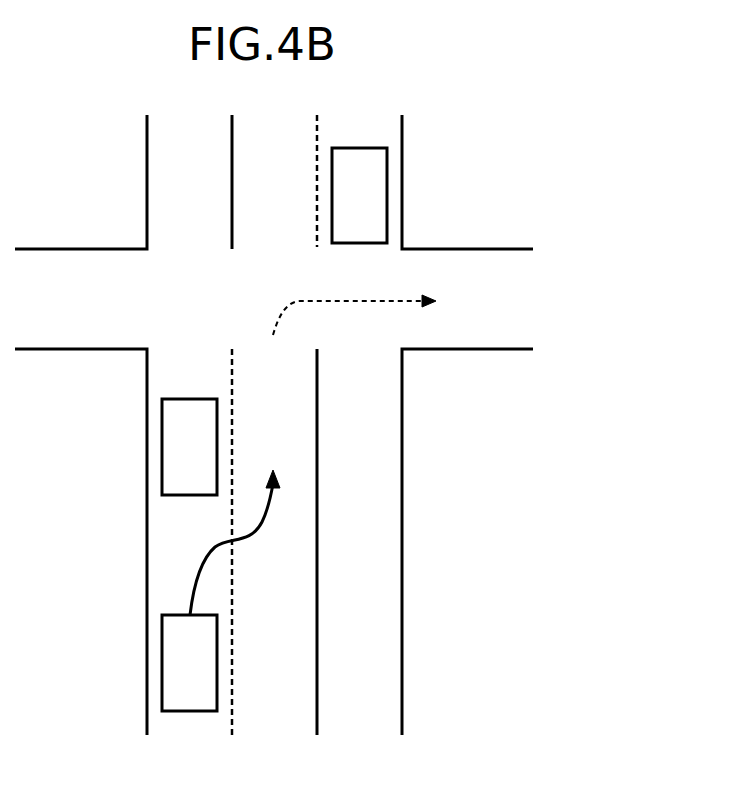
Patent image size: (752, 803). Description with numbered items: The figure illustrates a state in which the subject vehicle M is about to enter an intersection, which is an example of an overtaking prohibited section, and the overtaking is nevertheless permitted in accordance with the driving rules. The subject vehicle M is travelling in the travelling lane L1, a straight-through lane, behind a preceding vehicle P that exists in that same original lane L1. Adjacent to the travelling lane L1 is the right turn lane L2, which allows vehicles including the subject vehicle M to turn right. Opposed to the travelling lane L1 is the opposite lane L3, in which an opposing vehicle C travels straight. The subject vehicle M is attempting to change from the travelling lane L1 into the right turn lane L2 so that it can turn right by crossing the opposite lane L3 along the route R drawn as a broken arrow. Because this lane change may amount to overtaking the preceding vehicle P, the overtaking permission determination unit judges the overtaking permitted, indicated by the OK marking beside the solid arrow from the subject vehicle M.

The travelling lane L1 is at (109, 555).
The right turn lane L2 is at (274, 555).
The opposite lane L3 is at (345, 168).
The opposing vehicle C is at (359, 195).
The preceding vehicle P is at (189, 447).
The subject vehicle M is at (189, 663).
The route R is at (358, 302).
The lane change permitted indication OK is at (239, 529).